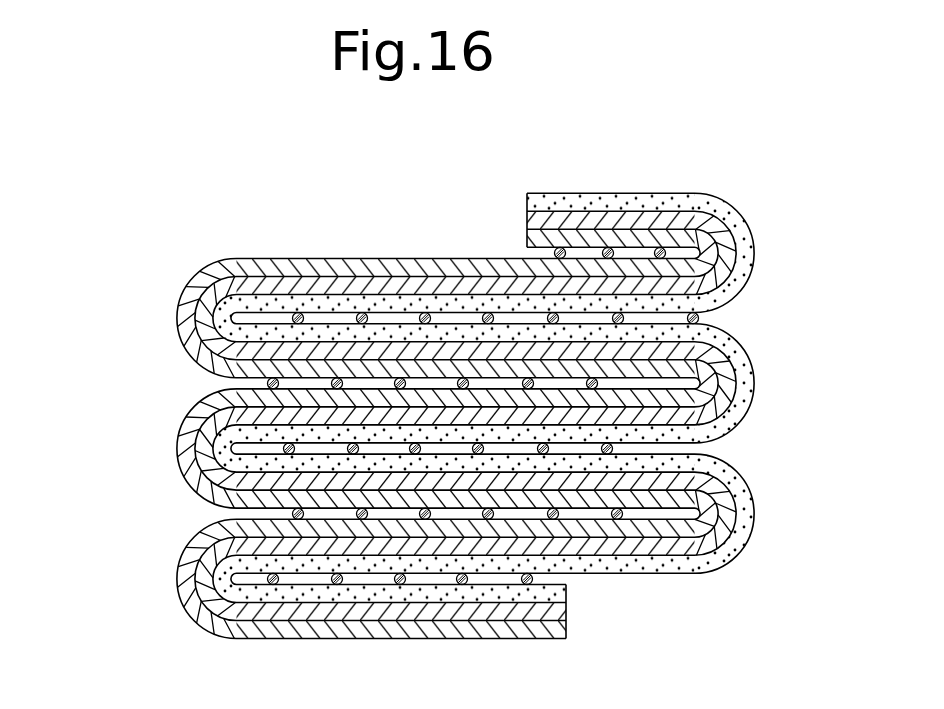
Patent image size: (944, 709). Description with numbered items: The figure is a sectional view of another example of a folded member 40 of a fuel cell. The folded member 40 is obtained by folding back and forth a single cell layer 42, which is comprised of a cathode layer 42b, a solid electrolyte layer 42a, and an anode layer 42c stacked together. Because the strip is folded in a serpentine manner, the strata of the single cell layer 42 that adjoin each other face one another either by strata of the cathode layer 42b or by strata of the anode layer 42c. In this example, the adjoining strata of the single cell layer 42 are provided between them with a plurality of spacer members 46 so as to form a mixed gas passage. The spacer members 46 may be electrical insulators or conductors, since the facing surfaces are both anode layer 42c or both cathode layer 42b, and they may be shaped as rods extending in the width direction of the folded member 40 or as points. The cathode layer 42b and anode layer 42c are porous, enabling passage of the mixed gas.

The folded member 40 is at (567, 147).
The single cell layer 42 is at (418, 154).
The solid electrolyte layer 42a is at (527, 220).
The cathode layer 42b is at (527, 203).
The anode layer 42c is at (527, 239).
The spacer member 46 is at (465, 398).